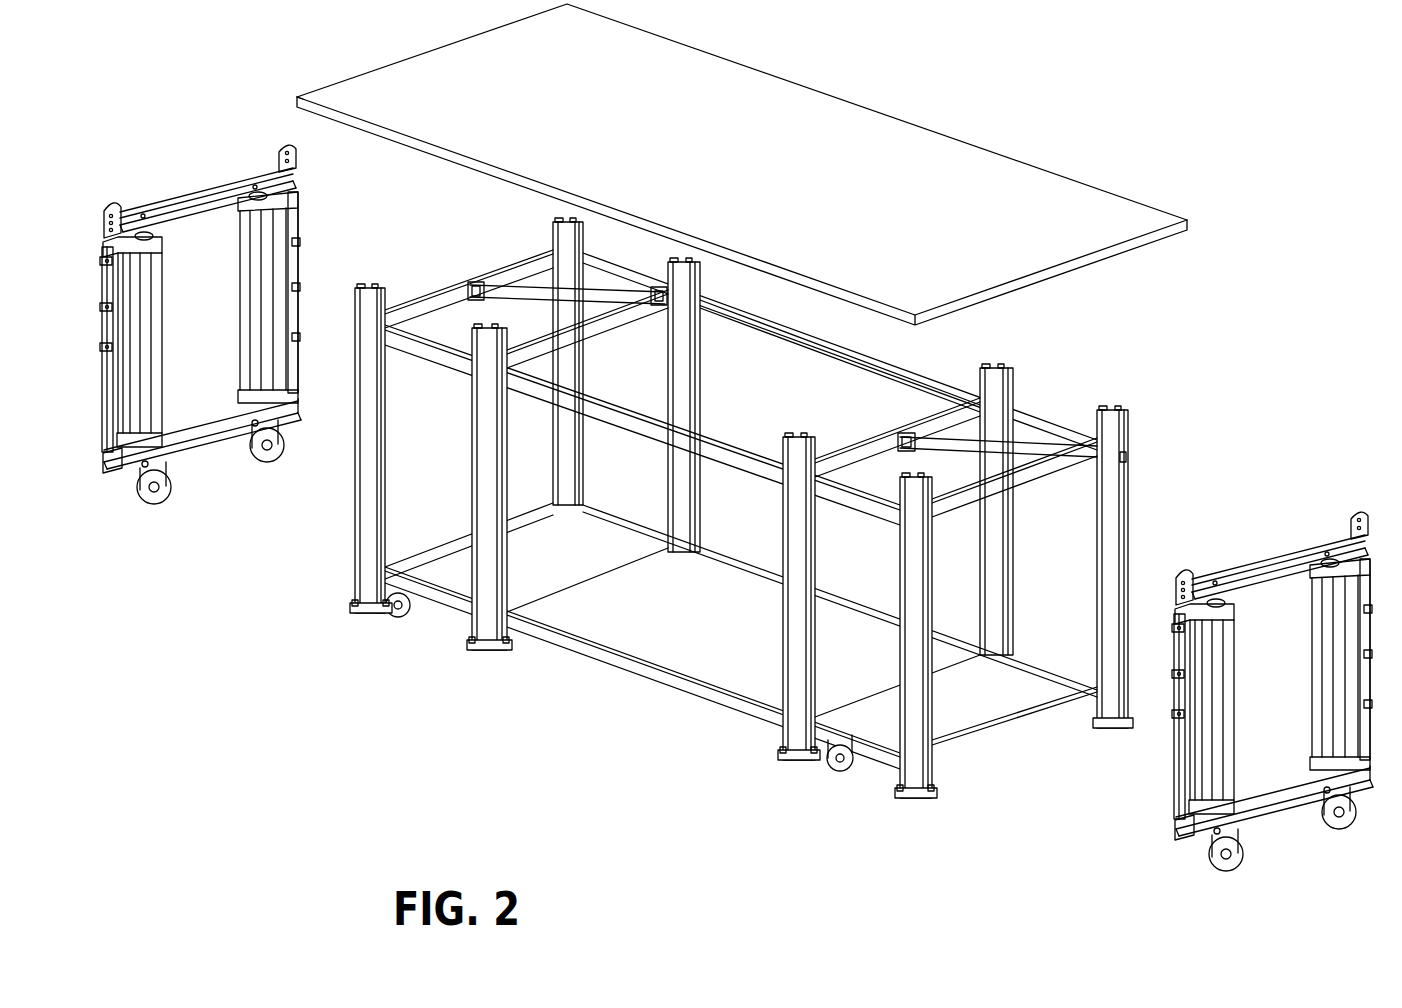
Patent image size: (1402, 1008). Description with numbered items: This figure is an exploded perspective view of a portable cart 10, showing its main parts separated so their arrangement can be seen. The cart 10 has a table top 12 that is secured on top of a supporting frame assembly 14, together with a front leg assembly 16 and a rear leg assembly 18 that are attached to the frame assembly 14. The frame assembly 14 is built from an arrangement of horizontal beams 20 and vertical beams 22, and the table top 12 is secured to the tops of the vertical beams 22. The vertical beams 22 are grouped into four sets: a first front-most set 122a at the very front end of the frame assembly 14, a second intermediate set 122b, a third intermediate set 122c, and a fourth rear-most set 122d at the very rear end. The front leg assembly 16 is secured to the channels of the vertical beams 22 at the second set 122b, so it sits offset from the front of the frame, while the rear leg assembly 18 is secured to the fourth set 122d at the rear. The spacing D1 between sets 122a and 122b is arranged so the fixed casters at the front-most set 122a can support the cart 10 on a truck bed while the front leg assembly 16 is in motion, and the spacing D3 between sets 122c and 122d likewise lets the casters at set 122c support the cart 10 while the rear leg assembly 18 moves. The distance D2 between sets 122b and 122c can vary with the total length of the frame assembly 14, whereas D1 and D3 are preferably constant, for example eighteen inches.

The portable cart 10 is at (682, 883).
The table top 12 is at (861, 170).
The supporting frame assembly 14 is at (1026, 362).
The front leg assembly 16 is at (162, 166).
The rear leg assembly 18 is at (1246, 538).
The horizontal beams 20 is at (655, 683).
The vertical beams 22 is at (700, 408).
The first front-most set 122a is at (345, 540).
The second intermediate set 122b is at (481, 667).
The third intermediate set 122c is at (754, 761).
The fourth rear-most set 122d is at (915, 821).
The spacing D1 is at (455, 625).
The distance D2 is at (790, 703).
The spacing D3 is at (897, 778).